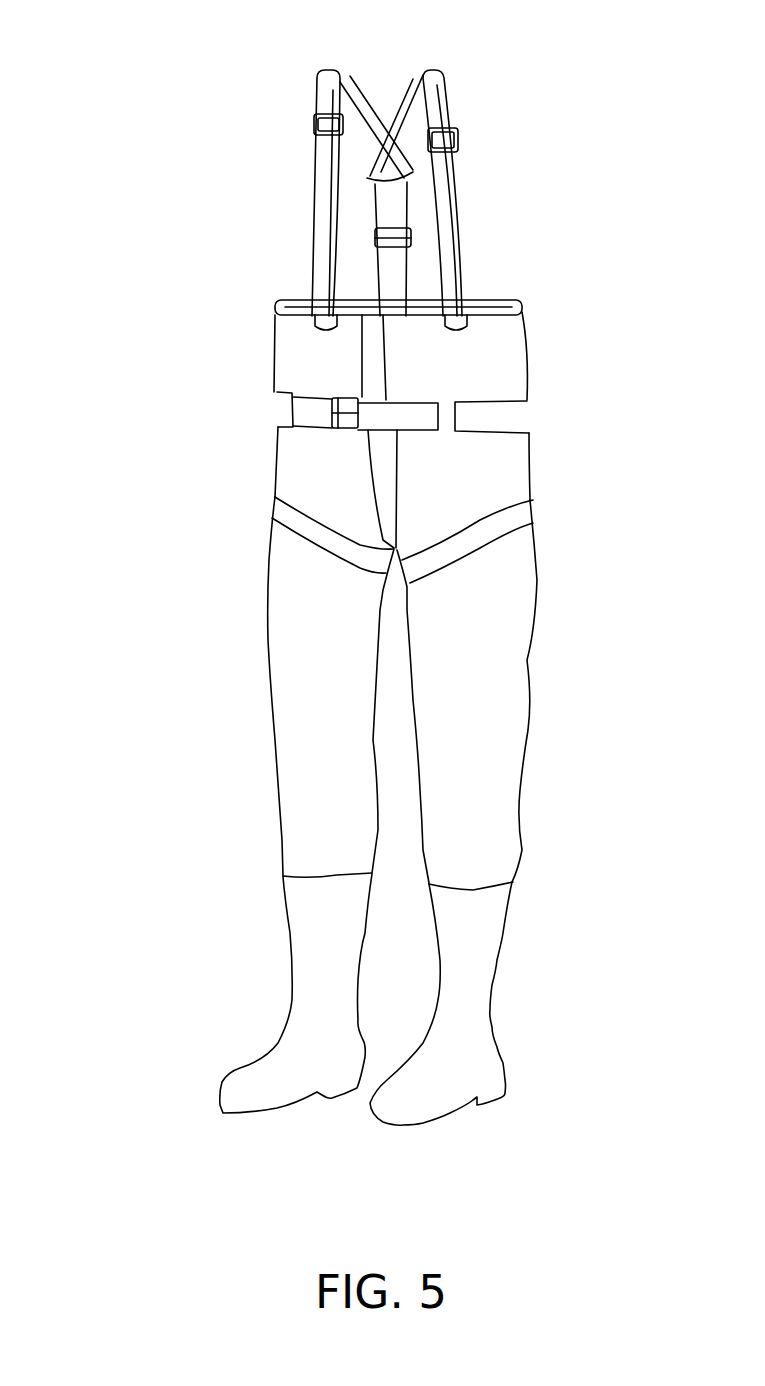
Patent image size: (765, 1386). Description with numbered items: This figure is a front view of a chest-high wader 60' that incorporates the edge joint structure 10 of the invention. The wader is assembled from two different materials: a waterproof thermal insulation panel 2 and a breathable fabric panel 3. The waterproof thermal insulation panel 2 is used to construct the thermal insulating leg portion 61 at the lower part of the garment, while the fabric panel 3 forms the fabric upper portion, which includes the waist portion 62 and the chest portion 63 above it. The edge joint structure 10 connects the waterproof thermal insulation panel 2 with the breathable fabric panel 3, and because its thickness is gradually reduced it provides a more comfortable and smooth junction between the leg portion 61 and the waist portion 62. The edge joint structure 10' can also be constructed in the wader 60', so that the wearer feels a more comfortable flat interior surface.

The wader 60' is at (354, 565).
The breathable fabric panel 3 is at (488, 333).
The chest portion 63 is at (552, 303).
The waist portion 62 is at (552, 427).
The leg portion 61 is at (539, 1080).
The edge joint structure 10 is at (302, 554).
The edge joint structure 10' is at (467, 541).
The waterproof thermal insulation panel 2 is at (313, 782).